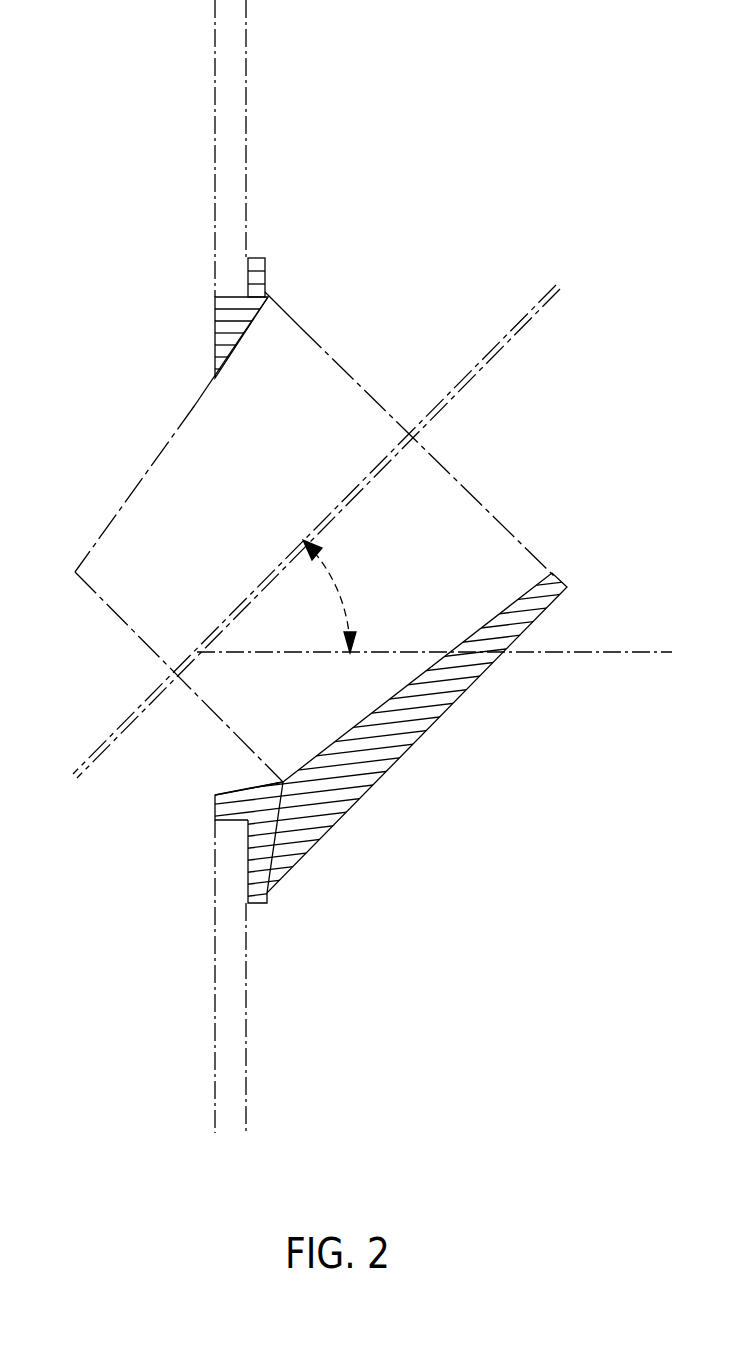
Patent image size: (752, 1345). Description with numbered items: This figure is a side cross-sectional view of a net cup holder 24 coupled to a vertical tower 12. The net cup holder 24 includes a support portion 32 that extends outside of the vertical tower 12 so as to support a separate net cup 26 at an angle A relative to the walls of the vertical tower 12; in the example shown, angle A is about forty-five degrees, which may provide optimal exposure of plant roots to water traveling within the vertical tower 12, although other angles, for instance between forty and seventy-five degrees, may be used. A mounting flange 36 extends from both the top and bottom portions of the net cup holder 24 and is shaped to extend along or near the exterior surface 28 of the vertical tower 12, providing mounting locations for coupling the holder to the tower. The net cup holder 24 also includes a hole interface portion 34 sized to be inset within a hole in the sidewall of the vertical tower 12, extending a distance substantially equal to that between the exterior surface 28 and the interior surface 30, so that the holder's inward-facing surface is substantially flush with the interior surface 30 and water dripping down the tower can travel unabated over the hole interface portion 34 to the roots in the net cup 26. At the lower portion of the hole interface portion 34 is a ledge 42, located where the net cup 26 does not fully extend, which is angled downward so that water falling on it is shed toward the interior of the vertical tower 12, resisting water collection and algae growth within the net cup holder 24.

The vertical tower 12 is at (210, 160).
The net cup holder 24 is at (503, 706).
The net cup 26 is at (327, 397).
The exterior surface 28 is at (247, 40).
The interior surface 30 is at (213, 50).
The support portion 32 is at (342, 782).
The hole interface portion 34 is at (220, 333).
The mounting flange 36 is at (257, 254).
The ledge 42 is at (238, 789).
The angle A is at (345, 592).